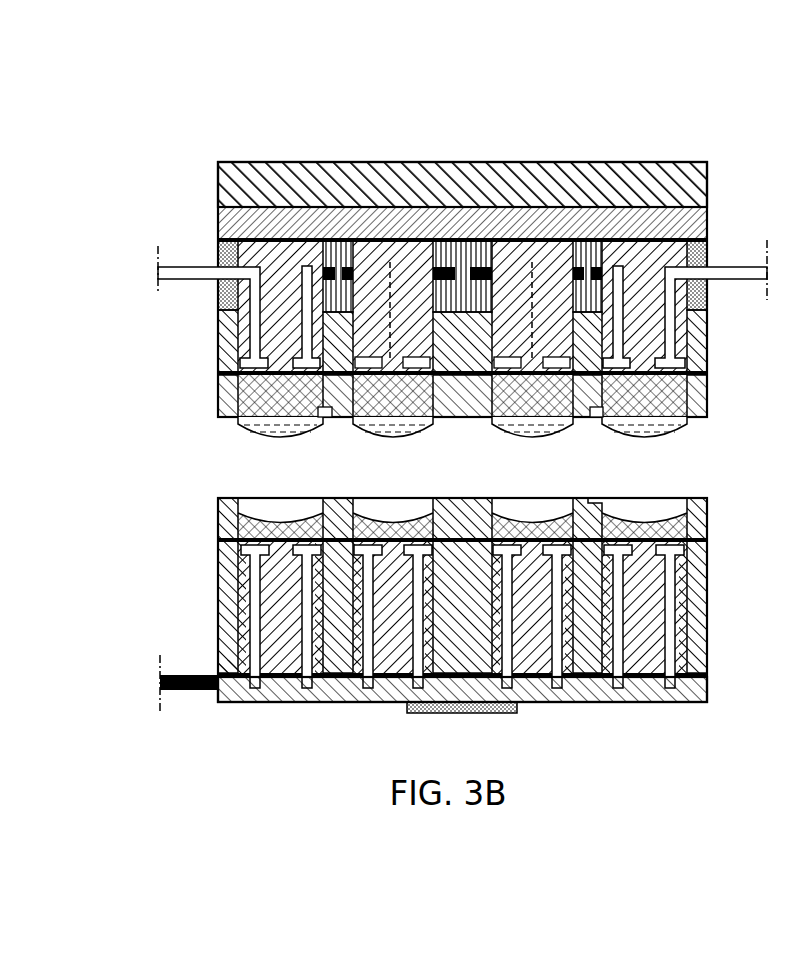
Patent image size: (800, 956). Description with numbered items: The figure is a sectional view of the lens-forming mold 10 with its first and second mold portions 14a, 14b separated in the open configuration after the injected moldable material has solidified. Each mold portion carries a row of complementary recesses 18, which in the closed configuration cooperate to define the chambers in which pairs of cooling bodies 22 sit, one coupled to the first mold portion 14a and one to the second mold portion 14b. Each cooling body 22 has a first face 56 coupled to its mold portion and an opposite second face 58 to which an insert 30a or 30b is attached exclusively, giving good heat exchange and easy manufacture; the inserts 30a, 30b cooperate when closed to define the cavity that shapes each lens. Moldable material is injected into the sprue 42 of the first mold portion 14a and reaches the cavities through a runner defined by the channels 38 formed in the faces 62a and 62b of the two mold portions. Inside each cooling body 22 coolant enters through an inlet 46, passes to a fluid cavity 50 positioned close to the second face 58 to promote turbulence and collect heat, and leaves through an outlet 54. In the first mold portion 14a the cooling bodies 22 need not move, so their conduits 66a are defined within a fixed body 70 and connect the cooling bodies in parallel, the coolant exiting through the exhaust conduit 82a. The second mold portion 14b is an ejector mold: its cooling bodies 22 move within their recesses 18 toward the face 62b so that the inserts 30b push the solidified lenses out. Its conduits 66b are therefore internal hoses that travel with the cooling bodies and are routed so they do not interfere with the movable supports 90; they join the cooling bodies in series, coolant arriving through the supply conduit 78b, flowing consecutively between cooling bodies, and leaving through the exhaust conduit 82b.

The mold 10 is at (176, 98).
The first mold portion 14a is at (684, 693).
The second mold portion 14b is at (698, 175).
The recess 18 is at (703, 405).
The cooling body 22 is at (618, 252).
The insert 30a is at (707, 541).
The insert 30b is at (664, 399).
The channel 38 is at (330, 408).
The sprue 42 is at (460, 713).
The inlet 46 is at (246, 263).
The fluid cavity 50 is at (222, 350).
The outlet 54 is at (326, 262).
The first face 56 is at (683, 233).
The second face 58 is at (683, 372).
The face 62a is at (221, 497).
The face 62b is at (220, 415).
The conduit 66a is at (256, 690).
The conduit 66b is at (481, 262).
The fixed body 70 is at (707, 620).
The supply conduit 78b is at (176, 265).
The exhaust conduit 82a is at (186, 691).
The exhaust conduit 82b is at (747, 264).
The movable support 90 is at (582, 262).